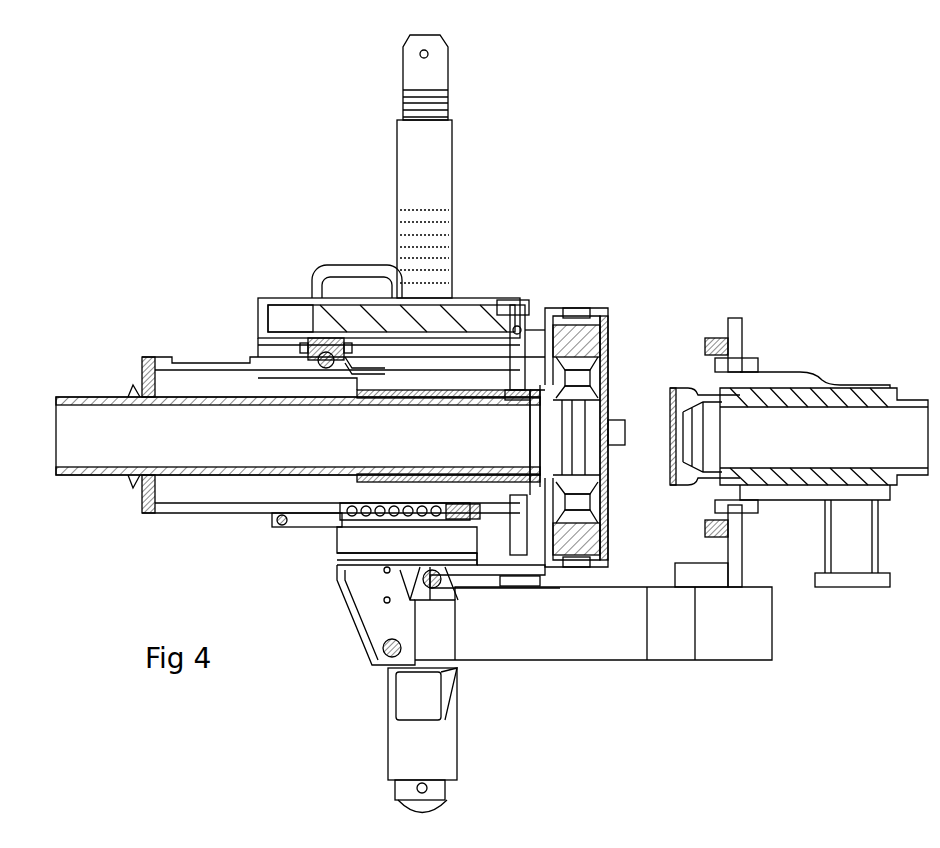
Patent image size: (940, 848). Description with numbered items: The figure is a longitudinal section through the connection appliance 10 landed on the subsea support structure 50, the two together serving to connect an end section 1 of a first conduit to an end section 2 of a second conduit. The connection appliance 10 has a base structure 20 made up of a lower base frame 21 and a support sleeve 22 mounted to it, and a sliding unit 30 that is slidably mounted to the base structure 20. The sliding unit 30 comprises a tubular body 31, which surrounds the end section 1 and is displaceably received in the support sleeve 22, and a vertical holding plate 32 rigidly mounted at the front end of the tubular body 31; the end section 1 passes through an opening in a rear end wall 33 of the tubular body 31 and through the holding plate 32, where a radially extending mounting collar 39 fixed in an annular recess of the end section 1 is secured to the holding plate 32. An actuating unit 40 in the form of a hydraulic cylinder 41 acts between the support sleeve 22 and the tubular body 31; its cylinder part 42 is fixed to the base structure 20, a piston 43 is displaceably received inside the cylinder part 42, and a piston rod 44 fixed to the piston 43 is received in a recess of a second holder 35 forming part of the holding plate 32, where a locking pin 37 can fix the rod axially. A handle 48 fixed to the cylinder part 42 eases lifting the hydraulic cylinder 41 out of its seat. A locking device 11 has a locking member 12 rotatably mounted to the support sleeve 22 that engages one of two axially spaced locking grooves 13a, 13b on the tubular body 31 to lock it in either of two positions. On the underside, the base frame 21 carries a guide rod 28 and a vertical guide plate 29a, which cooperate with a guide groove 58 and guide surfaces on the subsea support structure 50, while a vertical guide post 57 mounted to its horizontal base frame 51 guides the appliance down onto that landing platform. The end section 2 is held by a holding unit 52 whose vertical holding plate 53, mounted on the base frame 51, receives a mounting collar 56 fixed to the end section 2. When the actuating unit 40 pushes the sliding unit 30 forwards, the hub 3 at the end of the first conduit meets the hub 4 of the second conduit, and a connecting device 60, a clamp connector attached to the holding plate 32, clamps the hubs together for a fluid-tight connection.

The end section of the first conduit 1 is at (95, 397).
The end section of the second conduit 2 is at (899, 394).
The hub 3 is at (606, 387).
The hub 4 is at (678, 394).
The connection appliance 10 is at (194, 311).
The locking device 11 is at (303, 380).
The locking member 12 is at (325, 362).
The locking groove 13a is at (332, 368).
The locking groove 13b is at (352, 370).
The base structure 20 is at (321, 561).
The base frame 21 is at (346, 573).
The support sleeve 22 is at (300, 527).
The guide rod 28 is at (422, 600).
The guide plate 29a is at (372, 638).
The sliding unit 30 is at (173, 340).
The tubular body 31 is at (175, 513).
The holding plate 32 is at (548, 588).
The rear end wall 33 is at (165, 395).
The second holder 35 is at (516, 305).
The locking pin 37 is at (522, 328).
The mounting collar 39 is at (520, 502).
The actuating unit 40 is at (282, 255).
The hydraulic cylinder 41 is at (274, 290).
The cylinder part 42 is at (290, 298).
The piston 43 is at (330, 320).
The piston rod 44 is at (485, 307).
The handle 48 is at (362, 266).
The subsea support structure 50 is at (746, 683).
The base frame 51 is at (614, 657).
The holding unit 52 is at (751, 320).
The holding plate 53 is at (742, 526).
The mounting collar 56 is at (745, 392).
The guide post 57 is at (447, 131).
The guide groove 58 is at (445, 588).
The connecting device 60 is at (608, 332).